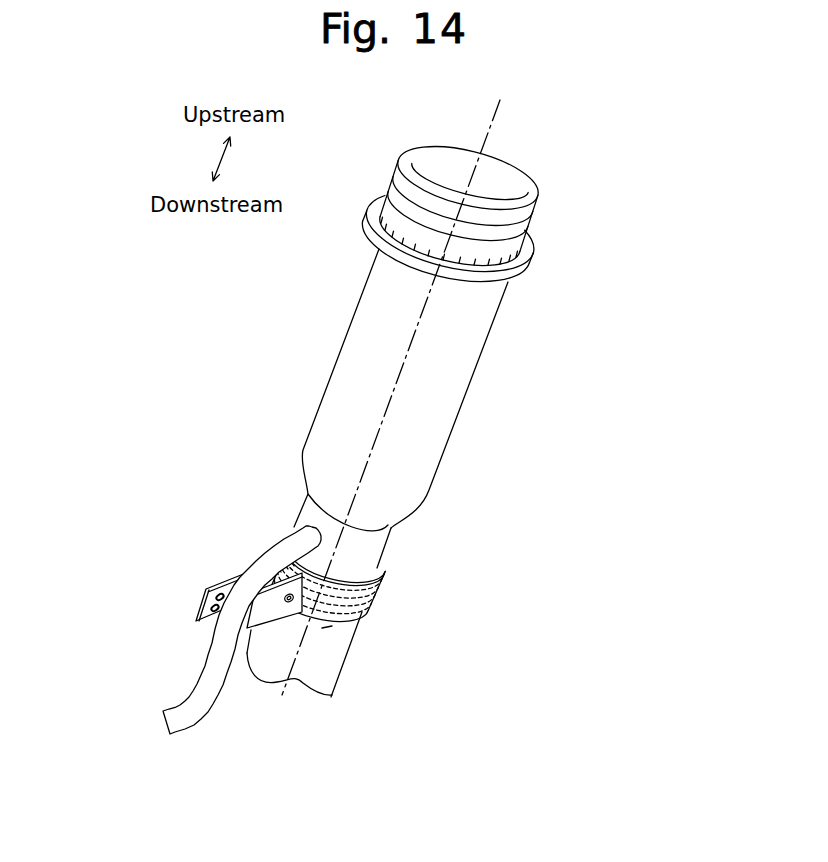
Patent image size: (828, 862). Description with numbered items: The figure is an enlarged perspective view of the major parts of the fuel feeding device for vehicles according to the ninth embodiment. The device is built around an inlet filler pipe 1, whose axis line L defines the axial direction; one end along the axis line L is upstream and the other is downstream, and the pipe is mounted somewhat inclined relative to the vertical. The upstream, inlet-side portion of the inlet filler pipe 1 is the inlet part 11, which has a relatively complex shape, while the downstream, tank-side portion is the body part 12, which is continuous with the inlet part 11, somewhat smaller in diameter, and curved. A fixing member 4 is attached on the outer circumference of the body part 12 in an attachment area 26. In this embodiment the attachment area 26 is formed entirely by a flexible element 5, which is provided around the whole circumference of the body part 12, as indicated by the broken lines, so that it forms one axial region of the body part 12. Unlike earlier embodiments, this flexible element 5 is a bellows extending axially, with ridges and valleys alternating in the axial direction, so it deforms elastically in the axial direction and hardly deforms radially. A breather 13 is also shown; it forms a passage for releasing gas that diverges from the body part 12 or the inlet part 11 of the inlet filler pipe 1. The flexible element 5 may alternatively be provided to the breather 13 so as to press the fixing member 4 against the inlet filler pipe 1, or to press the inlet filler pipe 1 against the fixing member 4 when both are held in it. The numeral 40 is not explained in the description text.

The axis line L is at (496, 114).
The inlet filler pipe 1 is at (480, 405).
The inlet part 11 is at (476, 310).
The body part 12 is at (335, 667).
The flexible element 5 is at (377, 595).
The attachment area 26 is at (375, 605).
The fixing member 4 is at (363, 625).
The breather 13 is at (185, 703).
The joint portion 40 is at (327, 628).